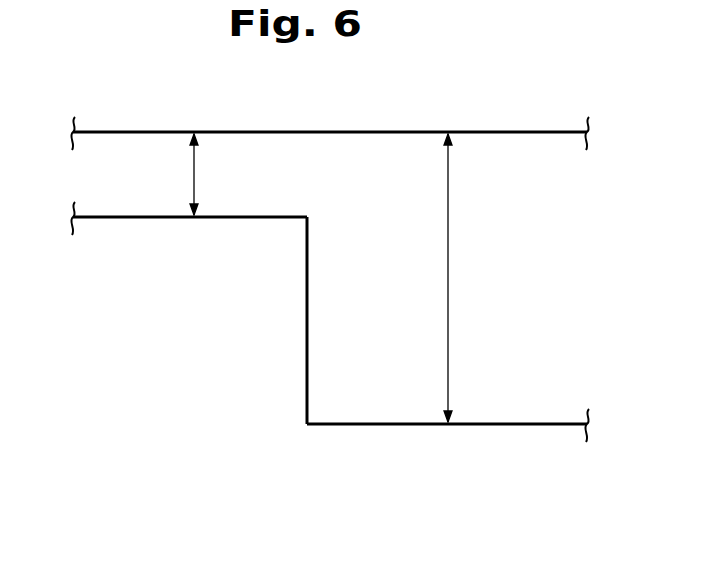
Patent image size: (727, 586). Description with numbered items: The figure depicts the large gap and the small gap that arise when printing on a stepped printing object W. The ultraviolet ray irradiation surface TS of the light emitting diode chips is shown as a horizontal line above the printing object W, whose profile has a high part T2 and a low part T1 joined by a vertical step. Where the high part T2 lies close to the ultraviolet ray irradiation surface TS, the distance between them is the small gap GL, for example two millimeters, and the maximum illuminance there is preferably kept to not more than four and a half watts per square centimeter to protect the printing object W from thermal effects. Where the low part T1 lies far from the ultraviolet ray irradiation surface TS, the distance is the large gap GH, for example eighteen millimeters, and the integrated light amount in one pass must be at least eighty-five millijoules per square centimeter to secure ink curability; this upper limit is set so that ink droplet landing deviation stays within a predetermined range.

The printing object W is at (330, 311).
The ultraviolet ray irradiation surface TS is at (535, 133).
The low part T1 is at (523, 424).
The high part T2 is at (257, 217).
The small gap GL is at (210, 174).
The large gap GH is at (467, 278).